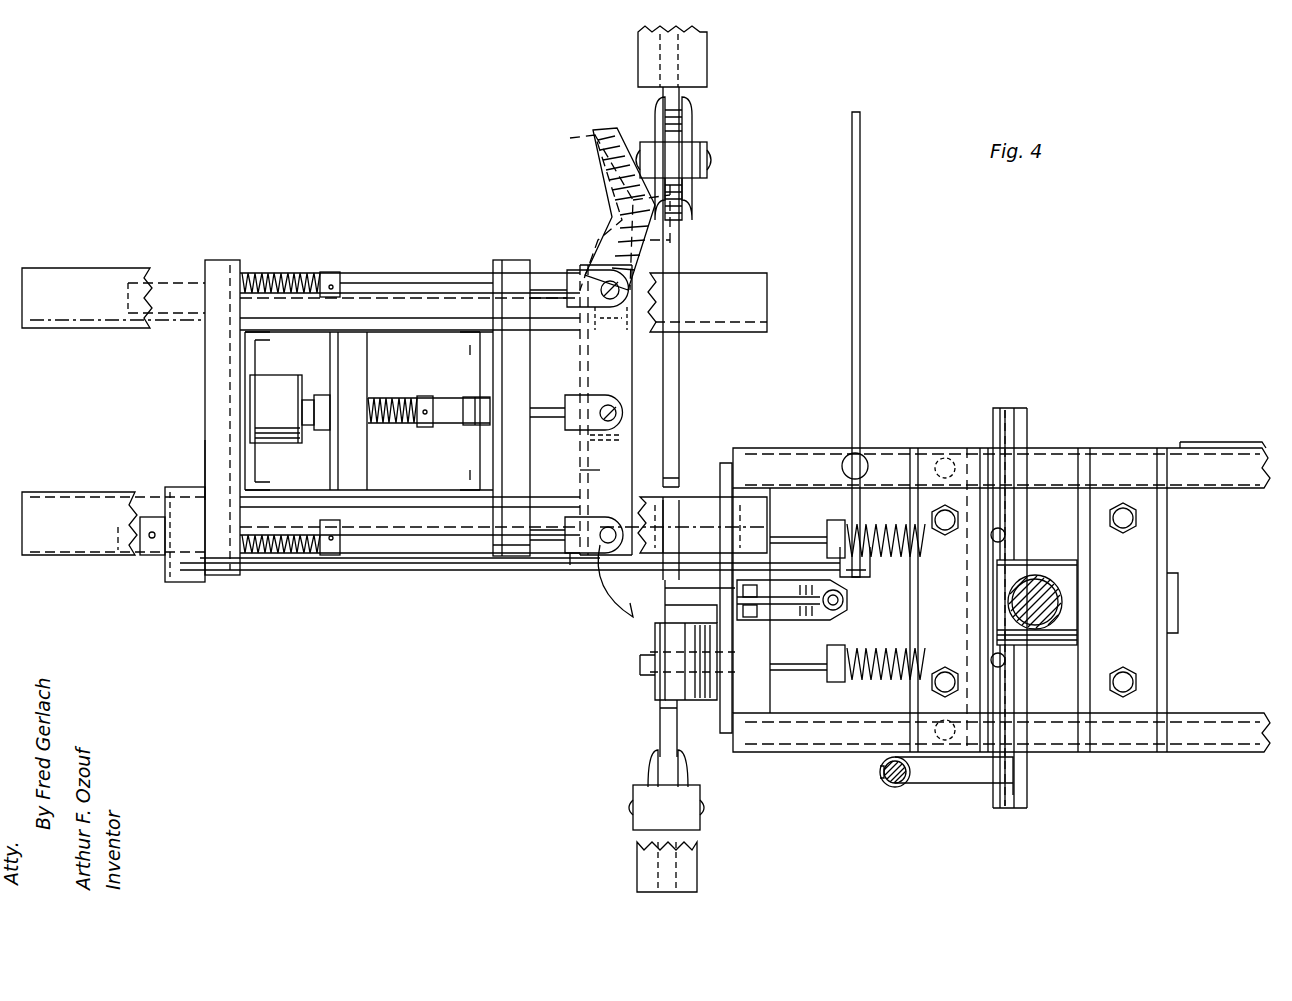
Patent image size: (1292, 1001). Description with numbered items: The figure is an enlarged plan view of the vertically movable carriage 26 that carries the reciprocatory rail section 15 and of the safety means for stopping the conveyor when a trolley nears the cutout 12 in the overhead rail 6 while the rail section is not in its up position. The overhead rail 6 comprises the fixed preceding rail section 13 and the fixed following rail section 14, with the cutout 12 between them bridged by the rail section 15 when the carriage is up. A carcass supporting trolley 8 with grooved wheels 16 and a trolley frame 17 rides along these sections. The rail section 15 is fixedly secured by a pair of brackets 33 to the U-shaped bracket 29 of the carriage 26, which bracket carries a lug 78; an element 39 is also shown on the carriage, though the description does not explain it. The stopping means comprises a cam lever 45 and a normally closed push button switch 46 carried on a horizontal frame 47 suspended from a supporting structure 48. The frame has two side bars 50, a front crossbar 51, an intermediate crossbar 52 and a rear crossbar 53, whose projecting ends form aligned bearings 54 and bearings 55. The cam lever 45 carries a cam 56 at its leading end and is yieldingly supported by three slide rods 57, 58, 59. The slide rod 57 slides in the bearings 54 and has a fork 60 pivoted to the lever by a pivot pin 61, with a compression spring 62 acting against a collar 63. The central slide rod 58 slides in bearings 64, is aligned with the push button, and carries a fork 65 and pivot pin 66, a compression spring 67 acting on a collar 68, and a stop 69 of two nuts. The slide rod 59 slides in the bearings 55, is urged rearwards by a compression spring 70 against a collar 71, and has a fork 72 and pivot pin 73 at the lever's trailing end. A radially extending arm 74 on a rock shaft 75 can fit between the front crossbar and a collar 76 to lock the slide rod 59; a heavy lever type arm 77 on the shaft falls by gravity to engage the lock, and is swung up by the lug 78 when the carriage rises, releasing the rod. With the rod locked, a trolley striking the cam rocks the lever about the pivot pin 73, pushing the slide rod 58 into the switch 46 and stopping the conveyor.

The overhead rail 6 is at (683, 444).
The carcass supporting trolley 8 is at (697, 127).
The cutout 12 is at (678, 490).
The preceding rail section 13 is at (681, 360).
The following rail section 14 is at (658, 733).
The vertically movable rail section 15 is at (668, 638).
The grooved wheels 16 is at (692, 196).
The trolley frames 17 is at (708, 157).
The carriage 26 is at (770, 446).
The U-shaped bracket 29 is at (1068, 448).
The brackets 33 is at (690, 684).
The shaft bearing 39 is at (1033, 580).
The cam lever 45 is at (600, 360).
The push button type switch 46 is at (277, 383).
The horizontal frame 47 is at (203, 402).
The supporting structure 48 is at (80, 332).
The side bars 50 is at (403, 322).
The front crossbar 51 is at (205, 457).
The intermediate crossbar 52 is at (367, 457).
The rear crossbar 53 is at (580, 465).
The bearings 54 is at (510, 260).
The bearings 55 is at (505, 557).
The cam 56 is at (618, 128).
The slide rod 57 is at (548, 272).
The slide rod 58 is at (550, 410).
The slide rod 59 is at (552, 530).
The fork 60 is at (590, 307).
The pivot pin 61 is at (620, 288).
The compression spring 62 is at (282, 272).
The collar 63 is at (338, 272).
The bearings 64 is at (585, 433).
The fork 65 is at (625, 405).
The pivot pin 66 is at (620, 415).
The compression spring 67 is at (400, 397).
The collar 68 is at (432, 398).
The stop 69 is at (477, 426).
The compression spring 70 is at (302, 556).
The collar 71 is at (331, 556).
The fork 72 is at (572, 553).
The pivot pin 73 is at (606, 540).
The radially extending arm 74 is at (197, 560).
The rock shaft 75 is at (255, 571).
The collar 76 is at (150, 556).
The lever type arm 77 is at (862, 408).
The lug 78 is at (842, 466).